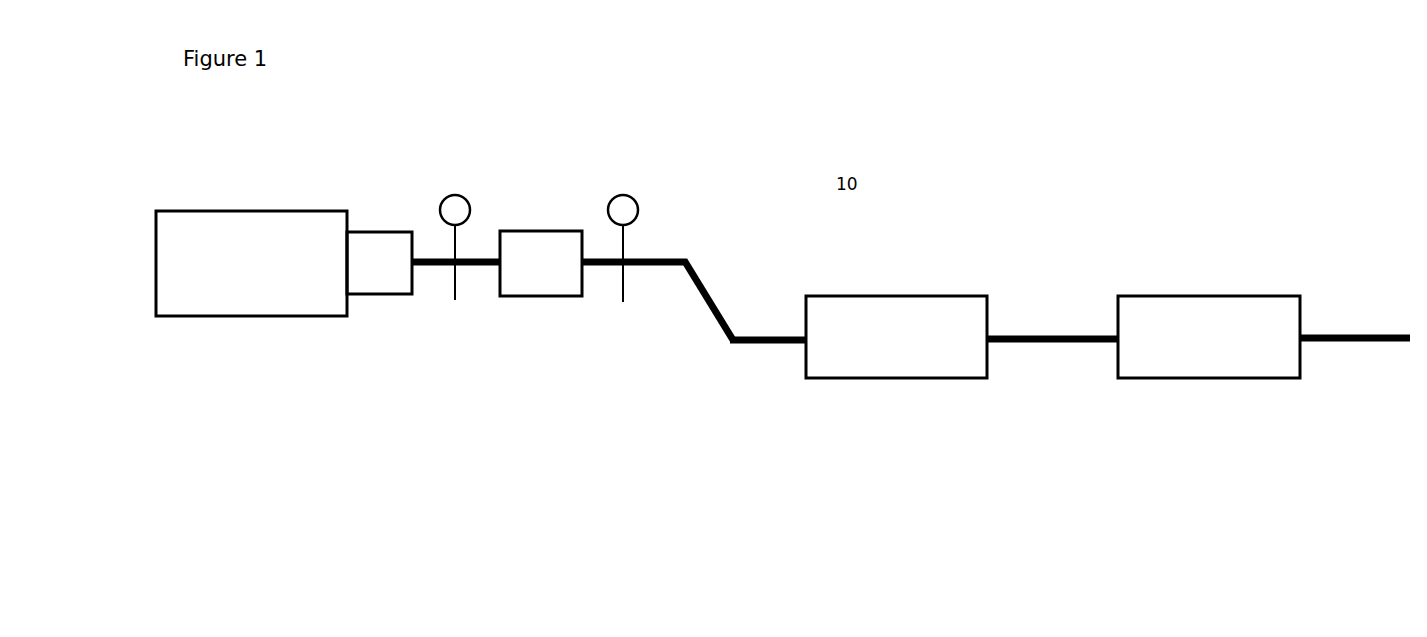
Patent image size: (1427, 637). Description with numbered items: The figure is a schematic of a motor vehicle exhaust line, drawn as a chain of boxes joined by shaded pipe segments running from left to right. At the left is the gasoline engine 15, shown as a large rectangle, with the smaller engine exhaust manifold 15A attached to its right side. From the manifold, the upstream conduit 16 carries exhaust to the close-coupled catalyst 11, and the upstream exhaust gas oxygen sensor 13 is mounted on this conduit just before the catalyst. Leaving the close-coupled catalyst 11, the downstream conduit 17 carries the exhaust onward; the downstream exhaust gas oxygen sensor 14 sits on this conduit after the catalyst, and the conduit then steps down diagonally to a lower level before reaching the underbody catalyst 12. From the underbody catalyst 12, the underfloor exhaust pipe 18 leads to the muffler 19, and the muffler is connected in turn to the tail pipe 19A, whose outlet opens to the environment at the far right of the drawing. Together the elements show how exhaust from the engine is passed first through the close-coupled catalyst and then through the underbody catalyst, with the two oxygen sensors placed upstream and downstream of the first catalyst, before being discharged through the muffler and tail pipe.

The close-coupled catalyst 11 is at (535, 300).
The underbody catalyst 12 is at (880, 381).
The upstream exhaust gas oxygen sensor 13 is at (466, 193).
The downstream exhaust gas oxygen sensor 14 is at (636, 192).
The gasoline engine 15 is at (232, 305).
The engine exhaust manifold 15A is at (387, 294).
The upstream conduit 16 is at (435, 267).
The downstream conduit 17 is at (742, 349).
The underfloor exhaust pipe 18 is at (1032, 345).
The muffler 19 is at (1176, 381).
The tail pipe 19A is at (1355, 345).